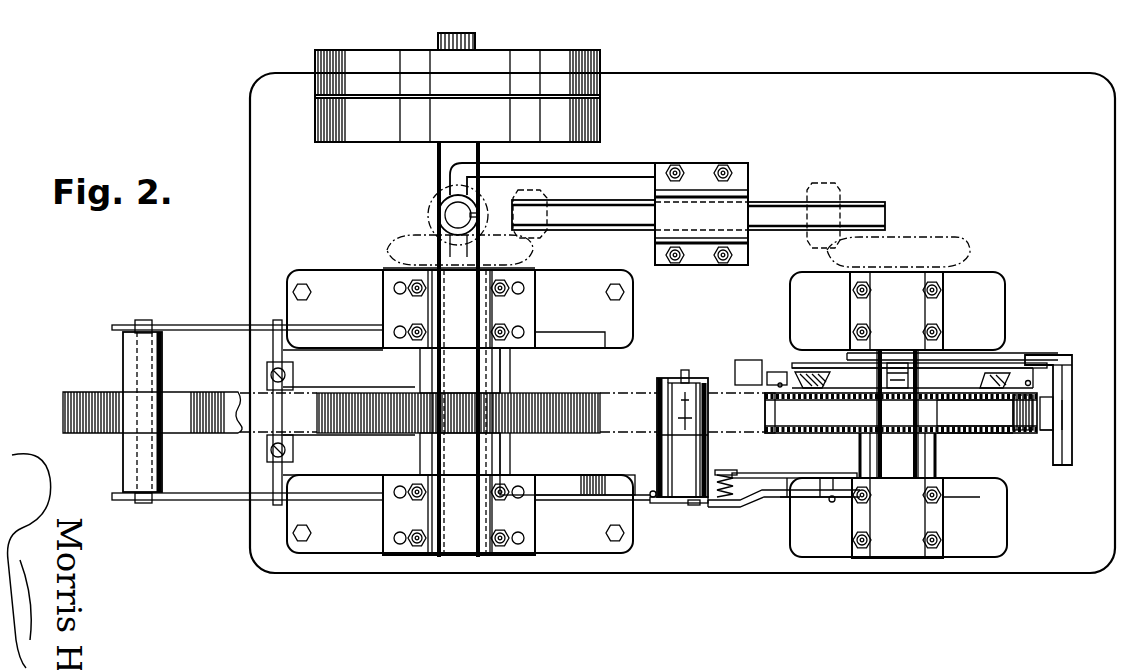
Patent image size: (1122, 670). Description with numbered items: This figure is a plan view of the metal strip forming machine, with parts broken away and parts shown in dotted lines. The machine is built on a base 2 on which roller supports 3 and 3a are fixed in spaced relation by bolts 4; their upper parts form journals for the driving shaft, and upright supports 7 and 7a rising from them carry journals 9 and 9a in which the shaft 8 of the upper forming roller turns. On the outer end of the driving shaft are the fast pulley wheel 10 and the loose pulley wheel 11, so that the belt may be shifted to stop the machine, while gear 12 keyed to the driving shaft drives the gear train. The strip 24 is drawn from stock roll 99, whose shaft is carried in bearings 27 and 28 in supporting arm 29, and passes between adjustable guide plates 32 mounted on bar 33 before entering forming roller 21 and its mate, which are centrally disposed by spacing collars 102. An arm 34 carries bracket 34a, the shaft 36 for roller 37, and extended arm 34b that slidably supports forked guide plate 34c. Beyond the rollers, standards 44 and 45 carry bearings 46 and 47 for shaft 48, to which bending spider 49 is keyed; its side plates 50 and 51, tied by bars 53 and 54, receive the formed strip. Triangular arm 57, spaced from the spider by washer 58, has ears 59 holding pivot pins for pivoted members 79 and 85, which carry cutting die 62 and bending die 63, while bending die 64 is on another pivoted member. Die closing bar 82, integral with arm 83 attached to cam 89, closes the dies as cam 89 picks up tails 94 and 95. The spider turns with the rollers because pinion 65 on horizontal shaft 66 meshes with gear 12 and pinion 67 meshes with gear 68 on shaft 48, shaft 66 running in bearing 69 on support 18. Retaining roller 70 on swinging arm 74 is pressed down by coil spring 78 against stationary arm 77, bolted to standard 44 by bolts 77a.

The base 2 is at (250, 186).
The roller support 3 is at (580, 485).
The roller support 3a is at (440, 158).
The bolts 4 is at (300, 286).
The upright support 7 is at (508, 476).
The upright support 7a is at (510, 348).
The shaft 8 is at (478, 557).
The journal 9 is at (448, 514).
The journal 9a is at (459, 309).
The pulley wheel 10 is at (315, 123).
The pulley wheel 11 is at (409, 56).
The gear 12 is at (398, 238).
The support 18 is at (613, 168).
The forming roller 21 is at (583, 392).
The strip 24 is at (235, 390).
The bearing 27 is at (140, 505).
The bearing 28 is at (143, 320).
The supporting arm 29 is at (183, 325).
The guide plates 32 is at (308, 390).
The bar 33 is at (273, 335).
The arm 34 is at (678, 503).
The bracket 34a is at (672, 378).
The extended arm 34b is at (688, 370).
The forked guide plate 34c is at (702, 436).
The shaft 36 is at (698, 503).
The roller 37 is at (665, 448).
The standard 44 is at (833, 490).
The standard 45 is at (840, 343).
The bearing 46 is at (943, 520).
The bearing 47 is at (908, 305).
The shaft 48 is at (900, 560).
The bending spider 49 is at (1022, 432).
The side plate 50 is at (990, 433).
The side plate 51 is at (975, 413).
The bar 53 is at (765, 416).
The bar 54 is at (1045, 430).
The triangular arm 57 is at (990, 330).
The washer 58 is at (938, 386).
The ears 59 is at (790, 370).
The cutting die 62 is at (735, 372).
The bending die 63 is at (1030, 435).
The bending die 64 is at (883, 376).
The pinion 65 is at (530, 190).
The horizontal shaft 66 is at (575, 215).
The pinion 67 is at (830, 183).
The gear 68 is at (955, 246).
The bearing 69 is at (770, 214).
The retaining roller 70 is at (895, 445).
The swinging arm 74 is at (776, 474).
The stationary arm 77 is at (775, 498).
The bolts 77a is at (828, 500).
The coil spring 78 is at (735, 500).
The pivoted member 79 is at (775, 372).
The die closing bar 82 is at (1072, 410).
The arm 83 is at (1040, 355).
The pivoted member 85 is at (1058, 420).
The cam 89 is at (808, 363).
The tail 94 is at (823, 380).
The tail 95 is at (1065, 360).
The stock roll 99 is at (170, 432).
The spacing collars 102 is at (438, 369).